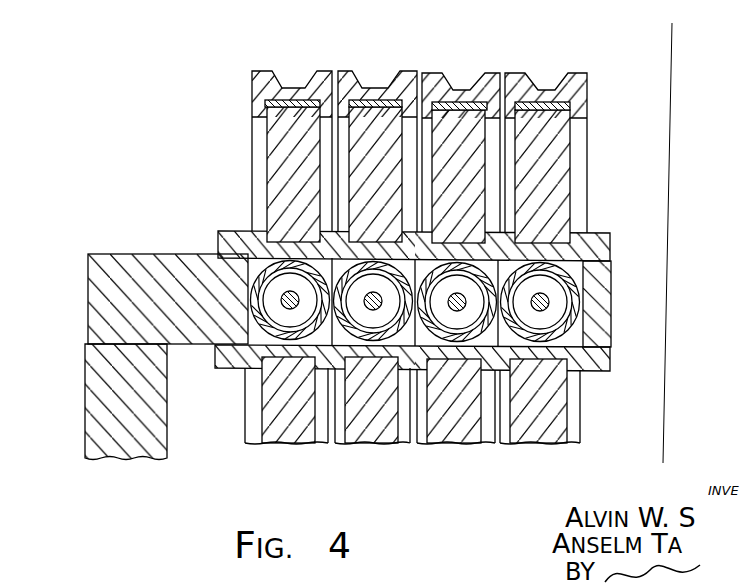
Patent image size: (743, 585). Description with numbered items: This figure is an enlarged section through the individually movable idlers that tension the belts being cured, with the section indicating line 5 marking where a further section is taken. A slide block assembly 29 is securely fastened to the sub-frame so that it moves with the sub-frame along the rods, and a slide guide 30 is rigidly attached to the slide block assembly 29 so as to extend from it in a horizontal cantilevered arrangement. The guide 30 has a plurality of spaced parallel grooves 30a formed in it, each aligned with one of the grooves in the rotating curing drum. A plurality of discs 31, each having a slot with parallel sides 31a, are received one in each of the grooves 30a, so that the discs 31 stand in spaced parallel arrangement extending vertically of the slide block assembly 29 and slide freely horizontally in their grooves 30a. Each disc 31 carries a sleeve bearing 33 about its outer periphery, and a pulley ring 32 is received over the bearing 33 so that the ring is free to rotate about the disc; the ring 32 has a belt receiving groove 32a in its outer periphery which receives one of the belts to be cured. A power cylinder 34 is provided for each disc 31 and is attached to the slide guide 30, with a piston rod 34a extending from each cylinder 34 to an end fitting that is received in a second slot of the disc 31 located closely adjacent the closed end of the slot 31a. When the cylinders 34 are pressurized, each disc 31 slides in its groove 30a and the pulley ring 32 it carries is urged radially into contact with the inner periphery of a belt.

The section line 5- 5 is at (622, 443).
The slide block assembly 29 is at (112, 264).
The slide guide 30 is at (236, 247).
The grooves 30a is at (455, 362).
The disc 31 is at (363, 170).
The slot with parallel sides 31a is at (560, 263).
The pulley ring 32 is at (323, 71).
The belt receiving groove 32a is at (538, 78).
The sleeve bearing 33 is at (355, 108).
The power cylinder 34 is at (350, 273).
The piston rod 34a is at (289, 310).